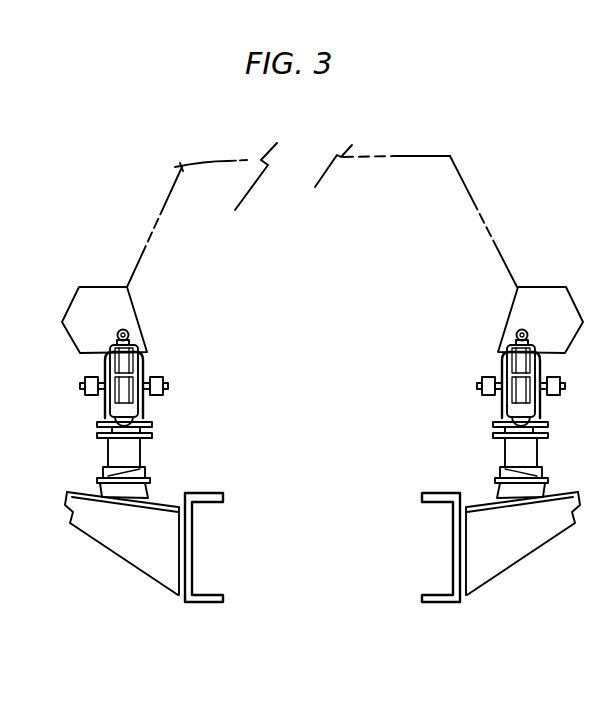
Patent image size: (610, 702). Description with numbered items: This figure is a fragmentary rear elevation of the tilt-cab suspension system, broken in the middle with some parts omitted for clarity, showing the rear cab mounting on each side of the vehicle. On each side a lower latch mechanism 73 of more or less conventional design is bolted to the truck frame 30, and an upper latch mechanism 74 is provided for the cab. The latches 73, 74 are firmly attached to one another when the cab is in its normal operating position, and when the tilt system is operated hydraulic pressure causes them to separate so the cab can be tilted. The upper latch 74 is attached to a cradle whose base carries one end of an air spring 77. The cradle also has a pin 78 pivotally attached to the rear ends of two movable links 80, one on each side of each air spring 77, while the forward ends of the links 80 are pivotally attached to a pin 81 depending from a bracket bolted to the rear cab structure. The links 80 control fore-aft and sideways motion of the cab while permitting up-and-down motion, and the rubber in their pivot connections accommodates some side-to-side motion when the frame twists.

The truck frame 30 is at (204, 493).
The lower latch mechanism 73 is at (131, 474).
The upper latch mechanism 74 is at (143, 477).
The air spring 77 is at (110, 358).
The pin 78 is at (82, 387).
The movable links 80 is at (147, 378).
The pin 81 is at (564, 386).